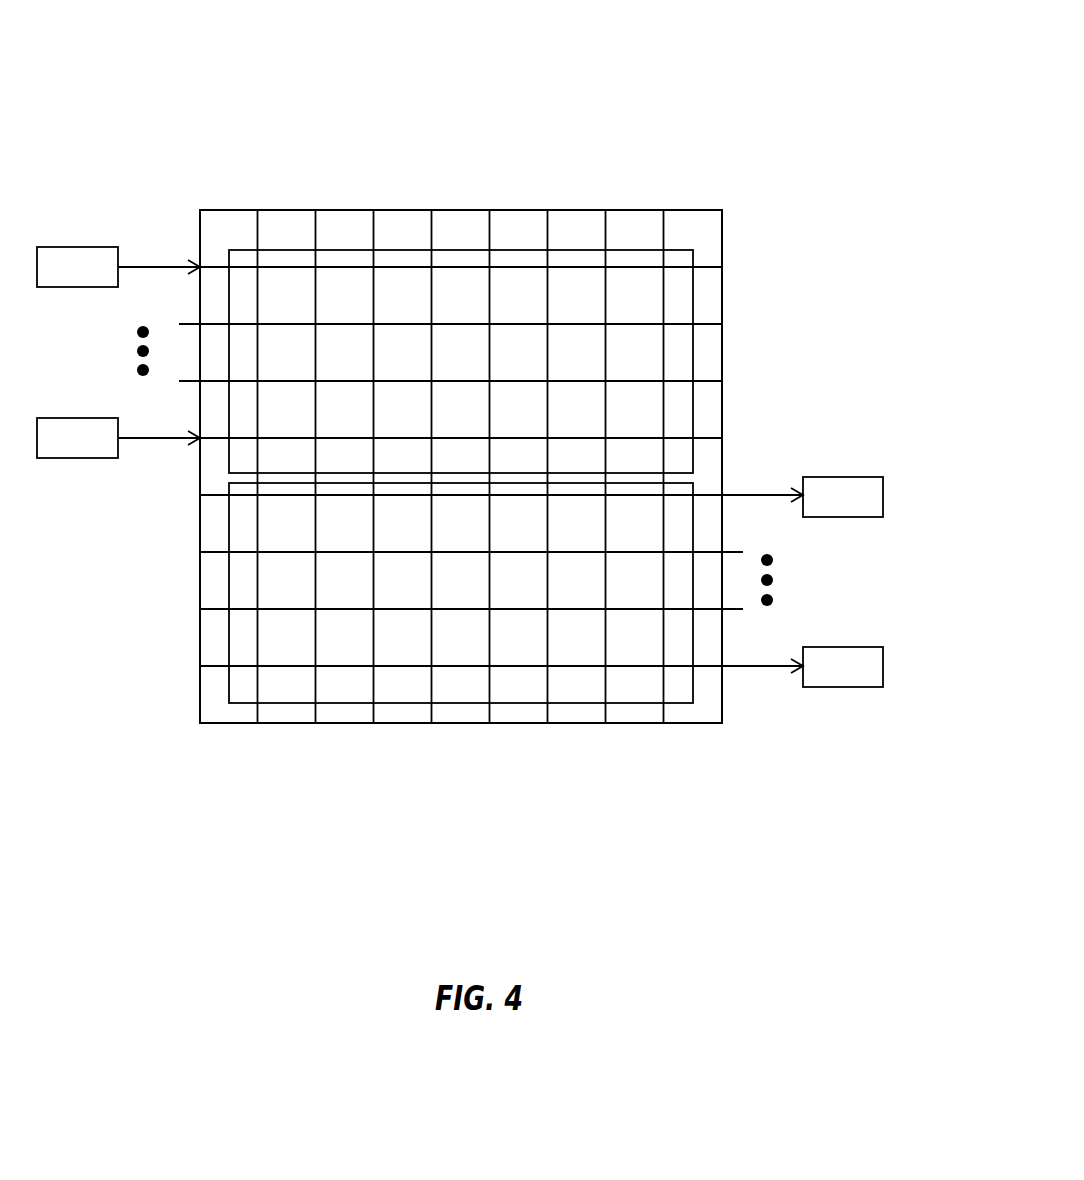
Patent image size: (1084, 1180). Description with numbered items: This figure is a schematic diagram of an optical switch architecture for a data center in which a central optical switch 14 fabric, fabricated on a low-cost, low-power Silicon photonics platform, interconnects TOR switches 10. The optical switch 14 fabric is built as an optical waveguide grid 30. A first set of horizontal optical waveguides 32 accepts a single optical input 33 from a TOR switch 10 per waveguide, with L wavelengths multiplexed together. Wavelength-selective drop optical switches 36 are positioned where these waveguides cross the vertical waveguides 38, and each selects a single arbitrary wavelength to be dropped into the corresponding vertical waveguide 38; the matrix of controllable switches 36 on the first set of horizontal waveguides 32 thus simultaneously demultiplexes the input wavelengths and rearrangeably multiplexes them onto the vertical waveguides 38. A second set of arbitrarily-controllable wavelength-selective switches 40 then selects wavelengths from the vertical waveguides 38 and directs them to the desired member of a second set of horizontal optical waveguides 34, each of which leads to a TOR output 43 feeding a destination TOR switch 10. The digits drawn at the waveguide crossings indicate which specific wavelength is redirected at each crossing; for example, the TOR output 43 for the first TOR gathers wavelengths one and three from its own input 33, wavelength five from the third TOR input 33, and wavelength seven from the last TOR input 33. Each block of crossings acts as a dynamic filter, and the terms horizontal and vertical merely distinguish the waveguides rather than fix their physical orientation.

The TOR switch 10 is at (100, 218).
The optical switch 14 is at (703, 168).
The optical waveguide grid 30 is at (198, 693).
The first set of horizontal optical waveguides 32 is at (727, 296).
The optical input 33 is at (140, 308).
The second set of horizontal optical waveguides 34 is at (724, 643).
The wavelength-selective drop optical switches 36 is at (580, 250).
The vertical waveguides 38 is at (348, 200).
The second set of wavelength-selective switches 40 is at (350, 703).
The TOR output 43 is at (772, 528).